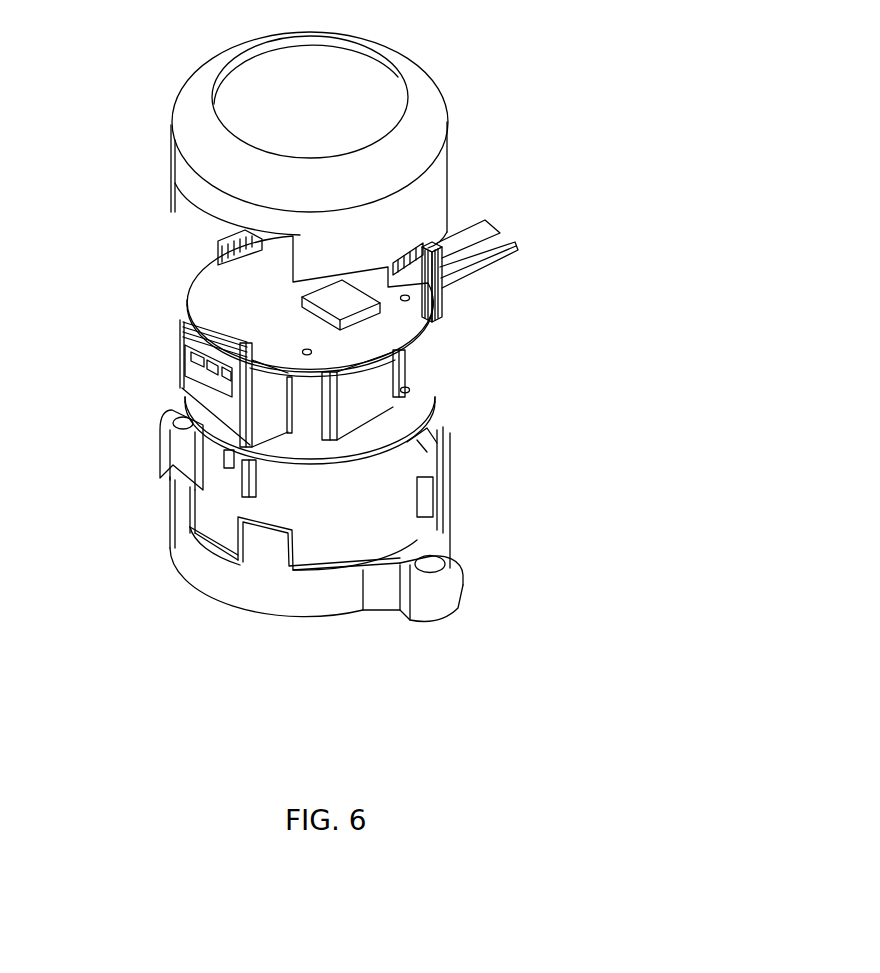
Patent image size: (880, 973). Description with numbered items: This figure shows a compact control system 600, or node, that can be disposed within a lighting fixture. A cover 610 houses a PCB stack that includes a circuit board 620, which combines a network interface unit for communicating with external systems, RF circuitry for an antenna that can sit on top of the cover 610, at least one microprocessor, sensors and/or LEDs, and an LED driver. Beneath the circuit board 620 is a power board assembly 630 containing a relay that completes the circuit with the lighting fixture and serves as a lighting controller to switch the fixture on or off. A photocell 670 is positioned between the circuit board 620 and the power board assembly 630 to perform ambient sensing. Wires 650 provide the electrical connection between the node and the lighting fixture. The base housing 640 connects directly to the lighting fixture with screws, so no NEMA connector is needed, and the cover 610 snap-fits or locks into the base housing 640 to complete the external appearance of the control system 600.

The control system 600 is at (154, 60).
The cover 610 is at (447, 152).
The circuit board 620 is at (418, 318).
The power board assembly 630 is at (430, 395).
The base housing 640 is at (455, 598).
The wires 650 is at (507, 248).
The photocell 670 is at (387, 382).